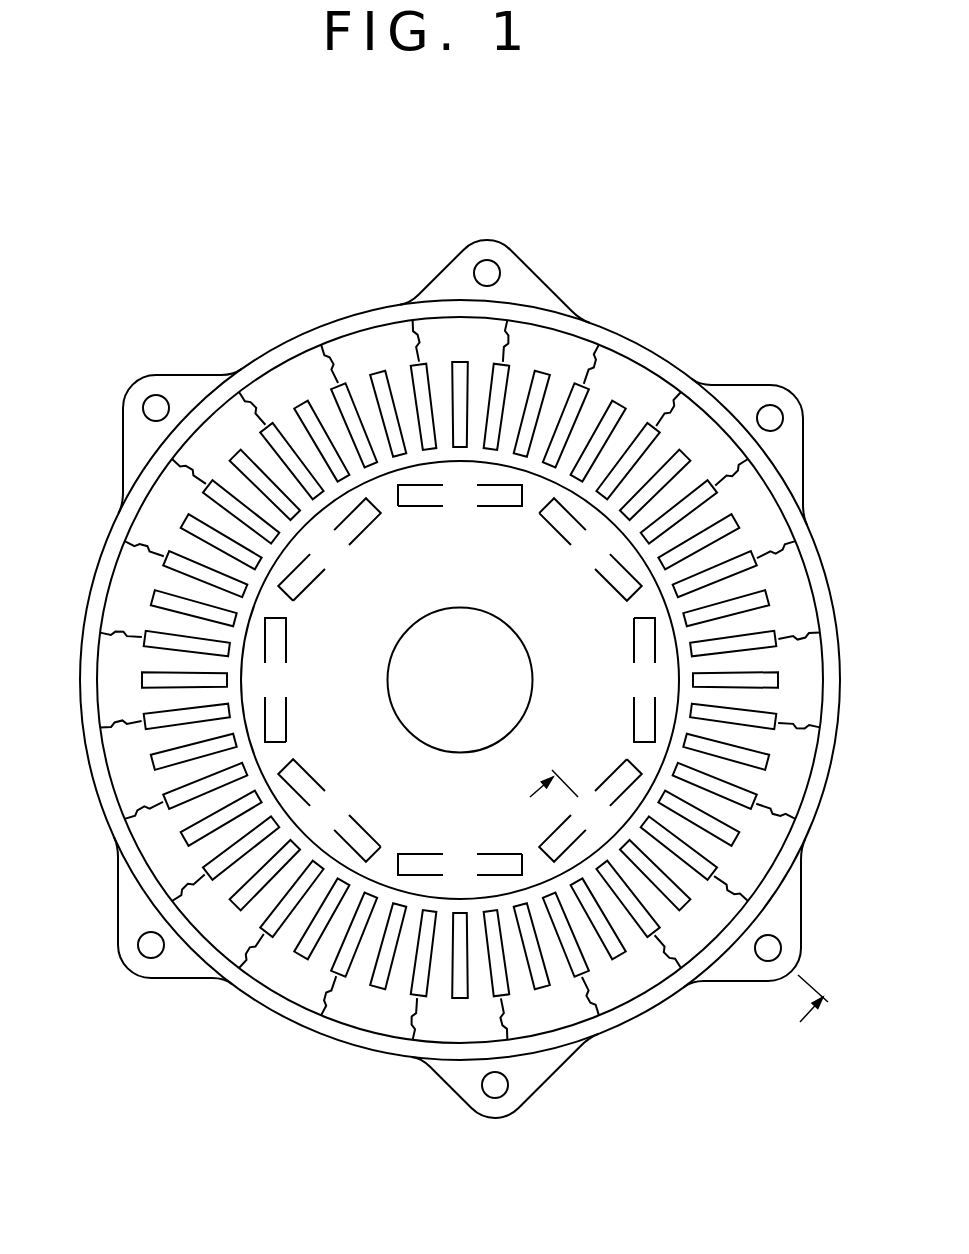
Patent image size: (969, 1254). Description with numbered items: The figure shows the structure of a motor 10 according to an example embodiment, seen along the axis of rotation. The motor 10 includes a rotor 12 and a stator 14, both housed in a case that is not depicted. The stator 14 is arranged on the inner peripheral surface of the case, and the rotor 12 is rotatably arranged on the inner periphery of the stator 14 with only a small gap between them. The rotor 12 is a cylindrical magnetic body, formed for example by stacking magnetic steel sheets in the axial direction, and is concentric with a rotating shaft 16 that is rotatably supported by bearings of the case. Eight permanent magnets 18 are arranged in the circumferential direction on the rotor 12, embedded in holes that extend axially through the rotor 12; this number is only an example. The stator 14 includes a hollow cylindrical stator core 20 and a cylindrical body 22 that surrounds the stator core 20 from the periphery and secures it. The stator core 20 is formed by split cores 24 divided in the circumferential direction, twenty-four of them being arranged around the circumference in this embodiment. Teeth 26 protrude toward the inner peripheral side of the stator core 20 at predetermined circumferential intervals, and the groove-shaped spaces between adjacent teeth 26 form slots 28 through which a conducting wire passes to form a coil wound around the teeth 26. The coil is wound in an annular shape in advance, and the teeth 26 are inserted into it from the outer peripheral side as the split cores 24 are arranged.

The motor 10 is at (680, 242).
The rotor 12 is at (414, 460).
The stator 14 is at (82, 605).
The rotating shaft 16 is at (438, 735).
The permanent magnet 18 is at (447, 509).
The stator core 20 is at (293, 1002).
The cylindrical body 22 is at (243, 987).
The split core 24 is at (555, 1008).
The teeth 26 is at (445, 960).
The slot 28 is at (382, 978).